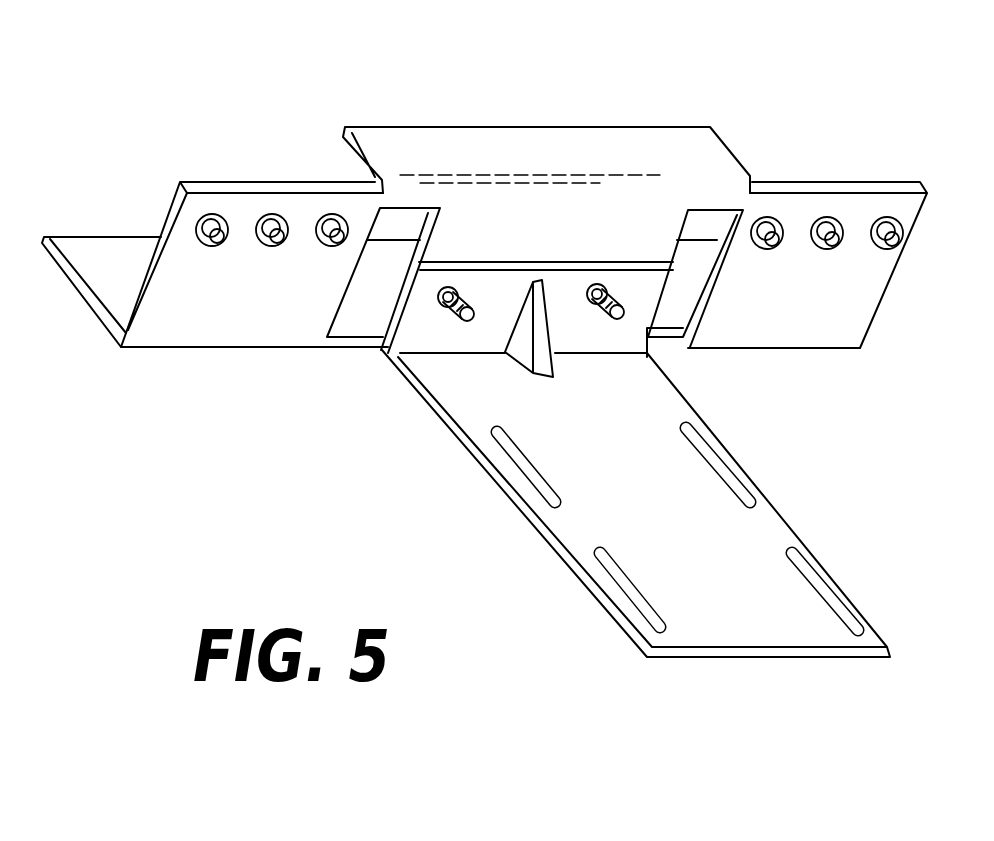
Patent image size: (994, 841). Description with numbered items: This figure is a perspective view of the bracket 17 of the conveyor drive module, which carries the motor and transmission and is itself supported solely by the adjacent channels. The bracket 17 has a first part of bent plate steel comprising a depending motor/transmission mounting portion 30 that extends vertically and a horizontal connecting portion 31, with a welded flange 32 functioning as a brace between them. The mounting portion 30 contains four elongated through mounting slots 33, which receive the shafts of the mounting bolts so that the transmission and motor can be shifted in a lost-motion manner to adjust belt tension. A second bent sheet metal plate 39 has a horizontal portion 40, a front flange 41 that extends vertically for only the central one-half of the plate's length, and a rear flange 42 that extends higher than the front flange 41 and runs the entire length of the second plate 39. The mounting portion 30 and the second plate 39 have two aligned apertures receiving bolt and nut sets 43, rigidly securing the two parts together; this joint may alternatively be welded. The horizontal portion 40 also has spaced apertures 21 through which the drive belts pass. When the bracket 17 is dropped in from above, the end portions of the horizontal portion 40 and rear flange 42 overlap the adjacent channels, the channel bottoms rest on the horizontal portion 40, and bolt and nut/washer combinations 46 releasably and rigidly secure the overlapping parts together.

The bracket 17 is at (484, 349).
The spaced apertures 21 is at (360, 290).
The motor/transmission mounting portion 30 is at (636, 503).
The horizontal connecting portion 31 is at (443, 332).
The welded flange 32 is at (530, 357).
The mounting slots 33 is at (625, 580).
The second bent sheet metal plate 39 is at (803, 307).
The horizontal portion 40 is at (767, 330).
The front flange 41 is at (537, 142).
The rear flange 42 is at (92, 250).
The bolt and nut sets 43 is at (596, 309).
The bolt and nut/washer combinations 46 is at (332, 212).